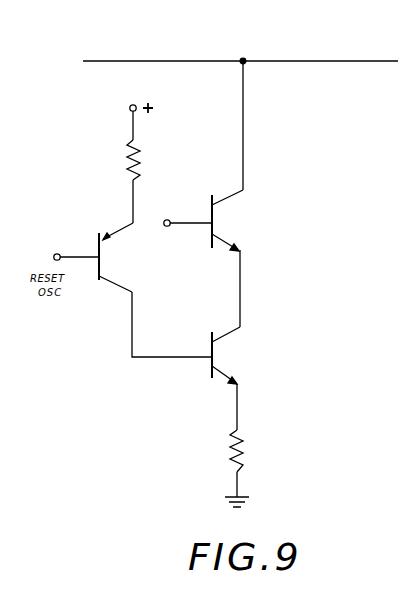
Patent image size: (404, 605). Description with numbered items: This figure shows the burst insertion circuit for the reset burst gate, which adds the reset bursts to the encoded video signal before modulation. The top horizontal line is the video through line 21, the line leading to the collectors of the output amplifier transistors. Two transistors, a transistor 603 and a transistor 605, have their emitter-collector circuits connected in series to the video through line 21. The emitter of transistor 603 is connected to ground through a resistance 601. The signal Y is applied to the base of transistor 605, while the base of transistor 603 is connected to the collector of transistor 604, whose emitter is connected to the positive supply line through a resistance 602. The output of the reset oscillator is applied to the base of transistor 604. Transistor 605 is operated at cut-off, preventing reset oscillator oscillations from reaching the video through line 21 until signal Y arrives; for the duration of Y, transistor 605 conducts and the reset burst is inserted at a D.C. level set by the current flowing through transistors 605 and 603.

The video through line 21 is at (364, 40).
The resistance 601 is at (228, 449).
The resistance 602 is at (128, 151).
The transistor 603 is at (210, 350).
The transistor 604 is at (97, 252).
The transistor 605 is at (207, 208).